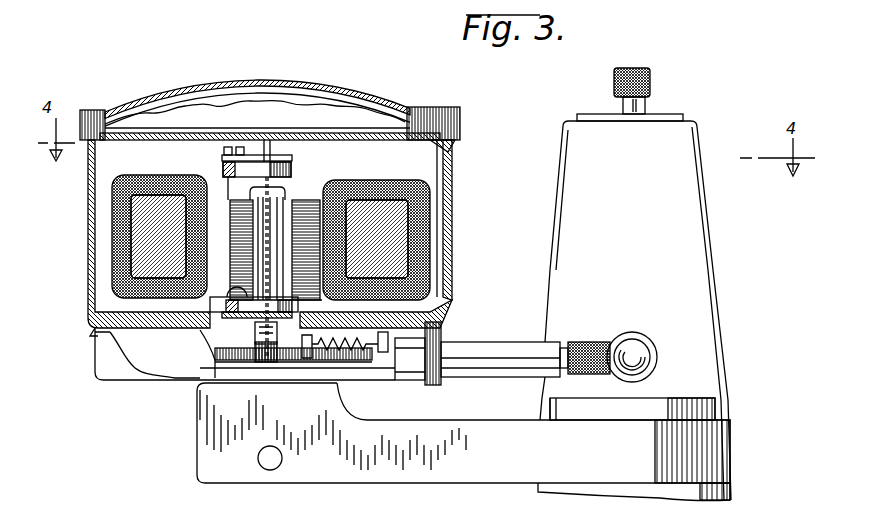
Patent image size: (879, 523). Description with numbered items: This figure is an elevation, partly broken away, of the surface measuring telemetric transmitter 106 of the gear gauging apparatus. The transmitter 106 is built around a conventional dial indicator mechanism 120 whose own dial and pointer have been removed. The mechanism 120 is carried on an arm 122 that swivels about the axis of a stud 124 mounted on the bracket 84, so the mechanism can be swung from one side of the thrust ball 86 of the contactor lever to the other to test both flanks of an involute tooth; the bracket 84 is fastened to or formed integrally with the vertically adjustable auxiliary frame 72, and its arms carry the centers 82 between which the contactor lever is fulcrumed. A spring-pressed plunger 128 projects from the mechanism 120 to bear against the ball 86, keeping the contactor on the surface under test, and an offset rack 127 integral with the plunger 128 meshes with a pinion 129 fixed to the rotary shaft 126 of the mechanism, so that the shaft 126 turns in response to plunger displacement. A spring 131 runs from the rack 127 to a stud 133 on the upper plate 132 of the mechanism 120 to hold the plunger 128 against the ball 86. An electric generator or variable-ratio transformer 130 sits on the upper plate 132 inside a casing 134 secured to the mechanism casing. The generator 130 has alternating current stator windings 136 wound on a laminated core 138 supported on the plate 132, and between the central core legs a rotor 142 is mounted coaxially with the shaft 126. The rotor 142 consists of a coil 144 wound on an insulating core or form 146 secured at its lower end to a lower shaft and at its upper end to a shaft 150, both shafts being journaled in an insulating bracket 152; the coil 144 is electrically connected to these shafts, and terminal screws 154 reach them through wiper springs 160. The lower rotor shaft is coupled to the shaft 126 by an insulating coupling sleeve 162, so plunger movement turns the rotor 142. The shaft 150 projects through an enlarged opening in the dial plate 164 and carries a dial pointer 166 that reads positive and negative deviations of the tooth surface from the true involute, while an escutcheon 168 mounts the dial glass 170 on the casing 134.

The auxiliary frame 72 is at (729, 494).
The centers 82 is at (646, 110).
The bracket 84 is at (708, 286).
The thrust ball 86 is at (642, 348).
The surface measuring telemetric transmitter 106 is at (476, 104).
The dial indicator mechanism 120 is at (97, 386).
The arm 122 is at (200, 447).
The stud 124 is at (695, 398).
The shaft 126 is at (302, 362).
The offset rack 127 is at (205, 370).
The plunger 128 is at (588, 342).
The pinion 129 is at (287, 378).
The electric generator 130 is at (466, 162).
The spring 131 is at (362, 352).
The upper plate 132 is at (424, 312).
The stud 133 is at (447, 338).
The casing 134 is at (448, 240).
The stator windings 136 is at (137, 176).
The laminated core 138 is at (312, 202).
The rotor 142 is at (294, 188).
The coil 144 is at (269, 302).
The armature bracket 146 is at (252, 197).
The shaft 150 is at (286, 142).
The bracket 152 is at (217, 289).
The terminal screws 154 is at (224, 150).
The wiper springs 160 is at (263, 152).
The coupling sleeve 162 is at (218, 464).
The dial plate 164 is at (390, 141).
The dial pointer 166 is at (344, 126).
The escutcheon 168 is at (477, 121).
The dial glass 170 is at (397, 100).